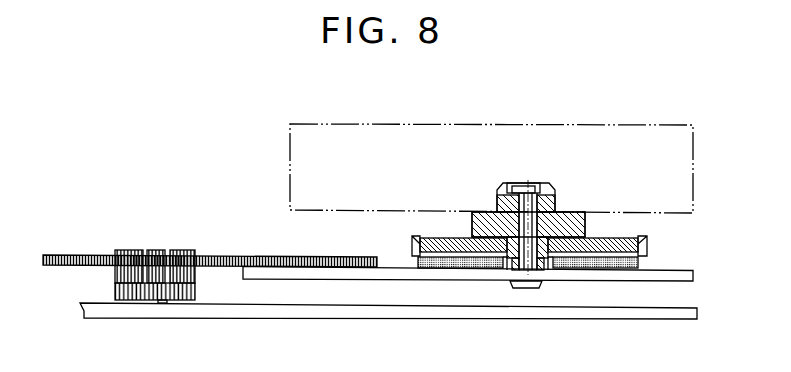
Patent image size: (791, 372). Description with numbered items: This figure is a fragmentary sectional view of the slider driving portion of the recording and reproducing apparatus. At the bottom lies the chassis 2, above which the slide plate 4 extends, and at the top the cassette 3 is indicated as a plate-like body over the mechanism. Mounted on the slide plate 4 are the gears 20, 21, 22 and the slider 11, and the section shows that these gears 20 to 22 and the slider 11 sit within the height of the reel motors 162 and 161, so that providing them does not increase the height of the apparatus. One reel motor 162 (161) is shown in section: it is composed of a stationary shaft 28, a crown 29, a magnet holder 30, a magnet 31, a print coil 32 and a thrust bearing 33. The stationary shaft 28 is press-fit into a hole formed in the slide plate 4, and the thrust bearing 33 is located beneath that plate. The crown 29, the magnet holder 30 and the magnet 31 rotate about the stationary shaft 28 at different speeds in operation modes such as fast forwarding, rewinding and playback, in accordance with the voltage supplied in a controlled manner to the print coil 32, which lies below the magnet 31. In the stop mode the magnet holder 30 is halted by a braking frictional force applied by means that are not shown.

The chassis 2 is at (697, 313).
The cassette 3 is at (290, 135).
The slide plate 4 is at (693, 276).
The slider 11 is at (279, 257).
The gear 20 is at (124, 250).
The gear 21 is at (152, 250).
The gear 22 is at (113, 292).
The stationary shaft 28 is at (527, 186).
The crown 29 is at (497, 203).
The magnet holder 30 is at (414, 236).
The magnet 31 is at (623, 238).
The print coil 32 is at (641, 263).
The thrust bearing 33 is at (547, 270).
The reel motor 162 is at (568, 212).
The reel motor 161 is at (582, 180).